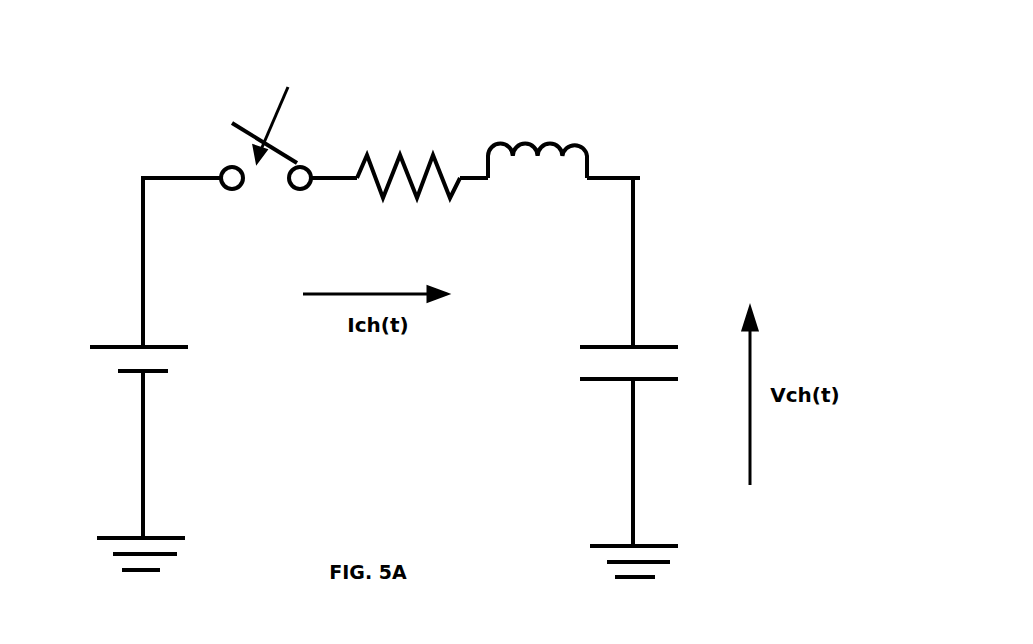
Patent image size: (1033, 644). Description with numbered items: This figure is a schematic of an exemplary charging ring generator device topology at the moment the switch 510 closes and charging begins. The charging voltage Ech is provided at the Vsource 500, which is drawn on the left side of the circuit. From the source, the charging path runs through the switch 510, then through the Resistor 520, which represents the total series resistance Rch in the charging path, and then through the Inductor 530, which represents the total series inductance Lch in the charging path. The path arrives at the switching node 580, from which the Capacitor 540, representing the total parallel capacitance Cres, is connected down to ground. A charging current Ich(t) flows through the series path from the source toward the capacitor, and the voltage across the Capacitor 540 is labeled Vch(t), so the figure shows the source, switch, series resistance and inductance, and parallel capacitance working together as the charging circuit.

The Vsource 500 is at (109, 434).
The switch 510 is at (266, 172).
The Resistor 520 is at (407, 190).
The Inductor 530 is at (537, 179).
The Capacitor 540 is at (589, 440).
The switching node 580 is at (633, 153).